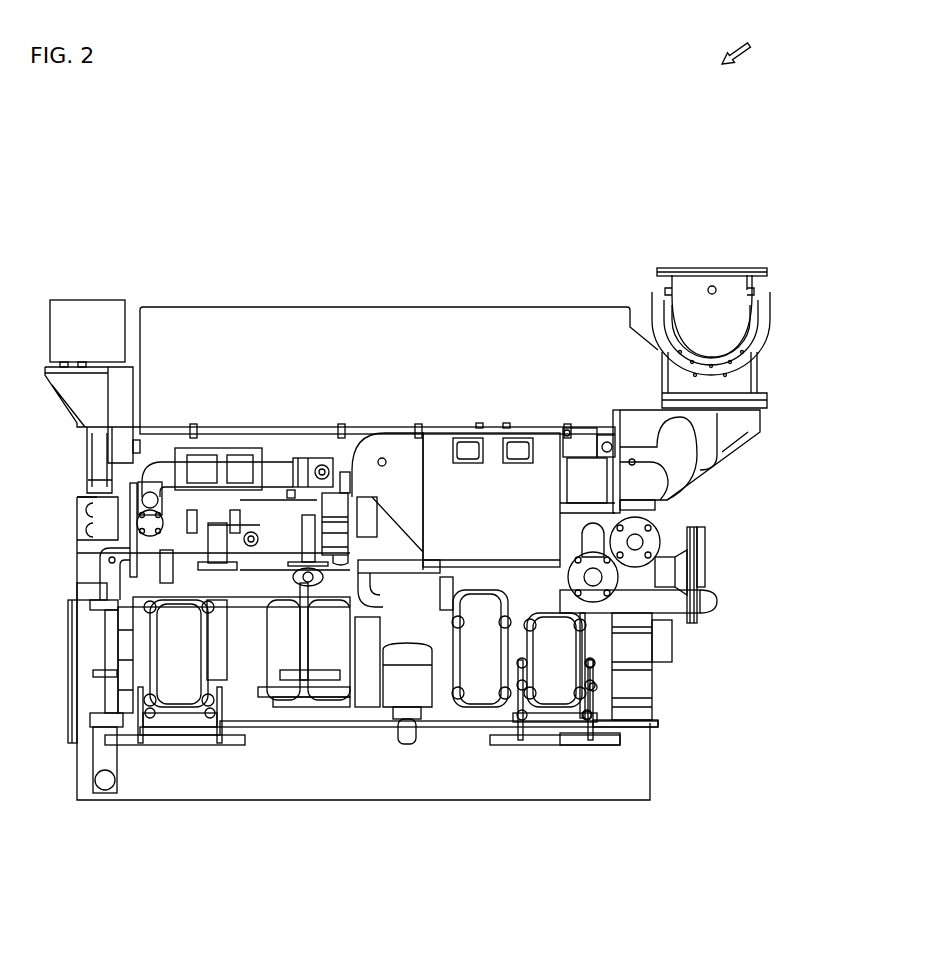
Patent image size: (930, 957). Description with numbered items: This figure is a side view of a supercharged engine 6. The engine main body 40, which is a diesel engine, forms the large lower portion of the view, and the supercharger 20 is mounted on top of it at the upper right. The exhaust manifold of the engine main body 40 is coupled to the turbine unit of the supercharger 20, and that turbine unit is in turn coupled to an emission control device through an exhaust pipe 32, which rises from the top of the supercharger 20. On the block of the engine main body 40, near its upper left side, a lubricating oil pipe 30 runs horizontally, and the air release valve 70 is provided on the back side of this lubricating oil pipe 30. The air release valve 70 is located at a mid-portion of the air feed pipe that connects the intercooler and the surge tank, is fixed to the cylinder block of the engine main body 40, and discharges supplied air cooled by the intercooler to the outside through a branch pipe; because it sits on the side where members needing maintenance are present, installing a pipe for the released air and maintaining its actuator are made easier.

The supercharged engine 6 is at (737, 43).
The supercharger 20 is at (770, 340).
The exhaust pipe 32 is at (695, 272).
The lubricating oil pipe 30 is at (273, 462).
The air release valve 70 is at (205, 448).
The engine main body 40 is at (714, 707).